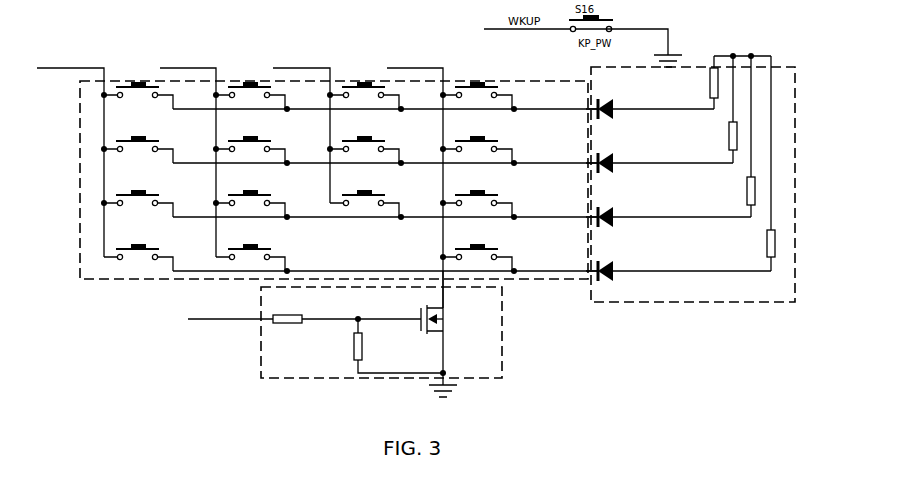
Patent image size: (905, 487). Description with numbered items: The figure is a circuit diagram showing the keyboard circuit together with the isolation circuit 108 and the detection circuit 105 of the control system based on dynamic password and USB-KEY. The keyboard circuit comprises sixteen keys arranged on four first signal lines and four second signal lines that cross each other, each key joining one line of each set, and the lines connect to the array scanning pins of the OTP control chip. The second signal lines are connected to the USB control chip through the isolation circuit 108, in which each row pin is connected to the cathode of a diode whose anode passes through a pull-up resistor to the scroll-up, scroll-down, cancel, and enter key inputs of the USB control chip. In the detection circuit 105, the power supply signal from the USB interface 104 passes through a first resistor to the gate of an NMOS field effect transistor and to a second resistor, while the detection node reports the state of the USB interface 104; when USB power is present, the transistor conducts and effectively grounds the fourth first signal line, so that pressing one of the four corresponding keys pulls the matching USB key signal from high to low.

The USB interface 104 is at (80, 172).
The detection circuit 105 is at (502, 326).
The isolation circuit 108 is at (705, 302).